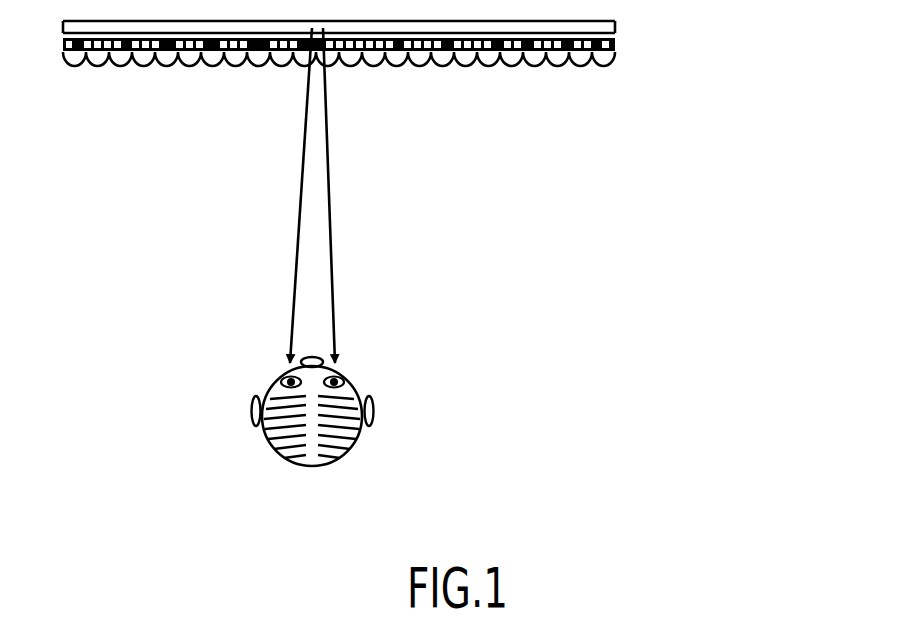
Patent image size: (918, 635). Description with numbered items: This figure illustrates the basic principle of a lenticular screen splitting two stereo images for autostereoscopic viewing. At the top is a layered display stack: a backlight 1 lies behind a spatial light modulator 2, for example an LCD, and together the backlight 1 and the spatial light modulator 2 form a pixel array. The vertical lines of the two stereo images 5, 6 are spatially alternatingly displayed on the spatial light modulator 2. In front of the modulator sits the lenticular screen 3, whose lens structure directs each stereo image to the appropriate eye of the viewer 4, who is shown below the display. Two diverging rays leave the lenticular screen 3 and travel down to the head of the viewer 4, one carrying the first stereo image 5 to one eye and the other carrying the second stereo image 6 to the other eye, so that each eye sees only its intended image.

The backlight 1 is at (617, 20).
The spatial light modulator 2 is at (618, 43).
The lenticular screen 3 is at (618, 61).
The viewer 4 is at (330, 411).
The stereo image 5 is at (287, 195).
The stereo image 6 is at (342, 195).